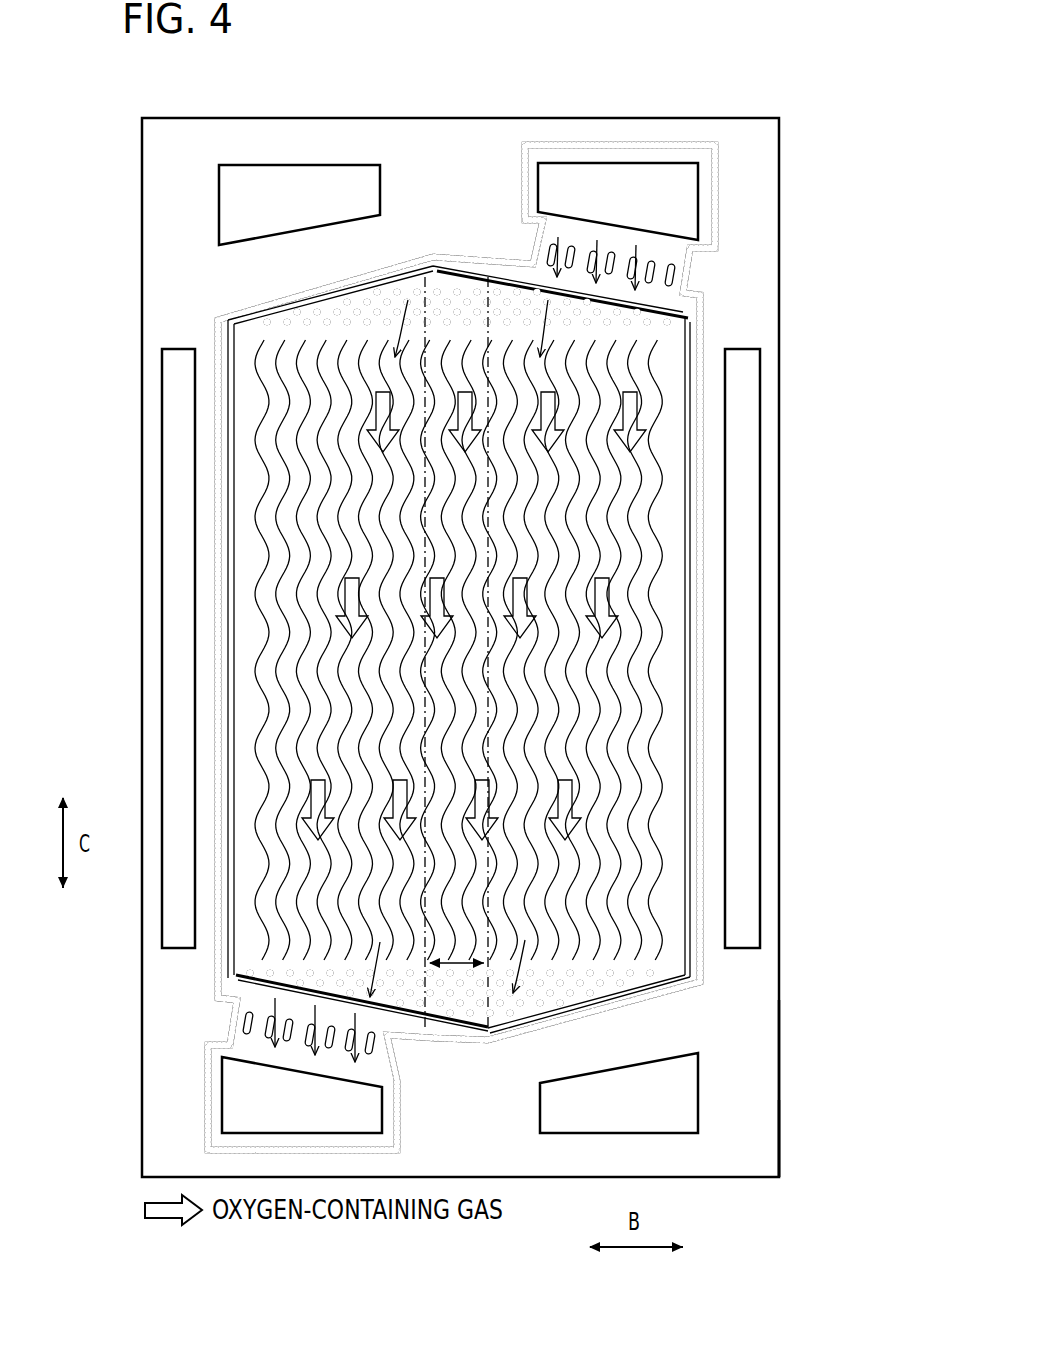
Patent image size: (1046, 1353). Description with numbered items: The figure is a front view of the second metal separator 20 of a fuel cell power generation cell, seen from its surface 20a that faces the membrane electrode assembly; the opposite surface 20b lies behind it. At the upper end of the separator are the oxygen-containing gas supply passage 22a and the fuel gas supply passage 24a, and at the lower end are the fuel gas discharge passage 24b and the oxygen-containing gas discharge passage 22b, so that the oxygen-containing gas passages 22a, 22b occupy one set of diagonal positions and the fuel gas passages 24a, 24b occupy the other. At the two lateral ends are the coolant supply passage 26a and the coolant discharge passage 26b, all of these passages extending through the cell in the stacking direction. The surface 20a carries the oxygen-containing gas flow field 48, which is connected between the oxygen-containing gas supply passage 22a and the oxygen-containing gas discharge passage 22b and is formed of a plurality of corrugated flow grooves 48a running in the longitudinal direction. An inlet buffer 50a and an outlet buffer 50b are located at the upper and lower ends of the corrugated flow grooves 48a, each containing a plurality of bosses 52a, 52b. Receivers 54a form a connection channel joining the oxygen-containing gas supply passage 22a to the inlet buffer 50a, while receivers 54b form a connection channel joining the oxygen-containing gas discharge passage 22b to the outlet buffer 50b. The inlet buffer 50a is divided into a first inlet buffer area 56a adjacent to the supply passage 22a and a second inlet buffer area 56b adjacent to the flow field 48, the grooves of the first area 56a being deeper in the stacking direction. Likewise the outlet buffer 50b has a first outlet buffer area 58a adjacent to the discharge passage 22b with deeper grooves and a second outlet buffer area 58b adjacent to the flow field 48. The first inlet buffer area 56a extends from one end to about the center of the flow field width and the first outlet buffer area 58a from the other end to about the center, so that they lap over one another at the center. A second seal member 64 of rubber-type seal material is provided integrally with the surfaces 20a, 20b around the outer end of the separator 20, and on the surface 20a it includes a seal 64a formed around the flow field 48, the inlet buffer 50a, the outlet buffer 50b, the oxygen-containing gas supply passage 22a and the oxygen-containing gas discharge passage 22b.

The second metal separator 20 is at (690, 59).
The surface 20a is at (740, 1083).
The surface 20b is at (740, 1120).
The oxygen-containing gas supply passage 22a is at (618, 201).
The oxygen-containing gas discharge passage 22b is at (302, 1095).
The fuel gas supply passage 24a is at (299, 205).
The fuel gas discharge passage 24b is at (619, 1093).
The coolant supply passage 26a is at (740, 597).
The coolant discharge passage 26b is at (180, 596).
The oxygen-containing gas flow field 48 is at (551, 650).
The corrugated flow grooves 48a is at (607, 853).
The inlet buffer 50a is at (452, 597).
The outlet buffer 50b is at (464, 1029).
The bosses 52a is at (335, 311).
The bosses 52b is at (544, 1005).
The receivers 54a is at (673, 267).
The receivers 54b is at (243, 1030).
The first inlet buffer area 56a is at (497, 280).
The second inlet buffer area 56b is at (436, 282).
The first outlet buffer area 58a is at (435, 1037).
The second outlet buffer area 58b is at (499, 1015).
The second seal member 64 is at (532, 647).
The seal 64a is at (702, 568).